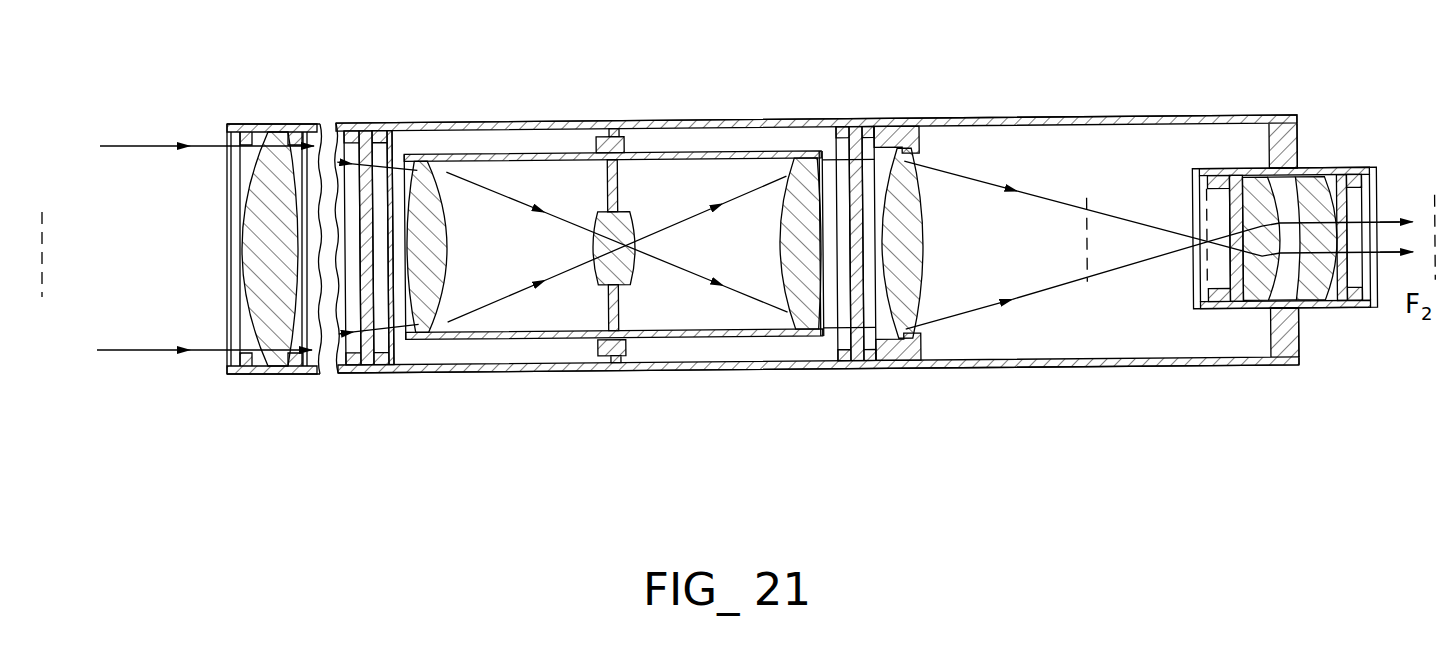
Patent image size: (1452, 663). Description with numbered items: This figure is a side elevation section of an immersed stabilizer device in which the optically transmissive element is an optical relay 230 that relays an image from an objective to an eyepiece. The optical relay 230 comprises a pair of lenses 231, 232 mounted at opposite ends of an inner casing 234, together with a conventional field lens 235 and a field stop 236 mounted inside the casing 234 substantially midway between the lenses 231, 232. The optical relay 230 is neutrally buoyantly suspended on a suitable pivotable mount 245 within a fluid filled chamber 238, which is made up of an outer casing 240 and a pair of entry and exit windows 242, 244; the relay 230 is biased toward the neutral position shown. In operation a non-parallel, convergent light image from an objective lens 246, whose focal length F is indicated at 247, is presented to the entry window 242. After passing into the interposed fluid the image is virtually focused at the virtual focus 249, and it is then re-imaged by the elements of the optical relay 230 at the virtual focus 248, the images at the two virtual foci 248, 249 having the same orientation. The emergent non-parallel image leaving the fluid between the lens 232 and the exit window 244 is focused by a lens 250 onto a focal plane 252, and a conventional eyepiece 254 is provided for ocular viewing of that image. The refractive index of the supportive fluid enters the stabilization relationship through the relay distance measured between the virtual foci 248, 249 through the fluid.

The optical relay 230 is at (625, 228).
The lens 231 is at (448, 268).
The lens 232 is at (783, 322).
The inner casing 234 is at (706, 152).
The field lens 235 is at (637, 274).
The field stop 236 is at (620, 184).
The fluid filled chamber 238 is at (474, 140).
The outer casing 240 is at (549, 122).
The entry window 242 is at (377, 184).
The exit window 244 is at (858, 125).
The pivotable mount 245 is at (620, 133).
The objective lens 246 is at (280, 126).
The focal length of objective lens 247 is at (1087, 205).
The virtual focus 248 is at (43, 253).
The virtual focus 249 is at (1433, 205).
The lens 250 is at (926, 126).
The focal plane 252 is at (1205, 207).
The eyepiece 254 is at (1314, 167).